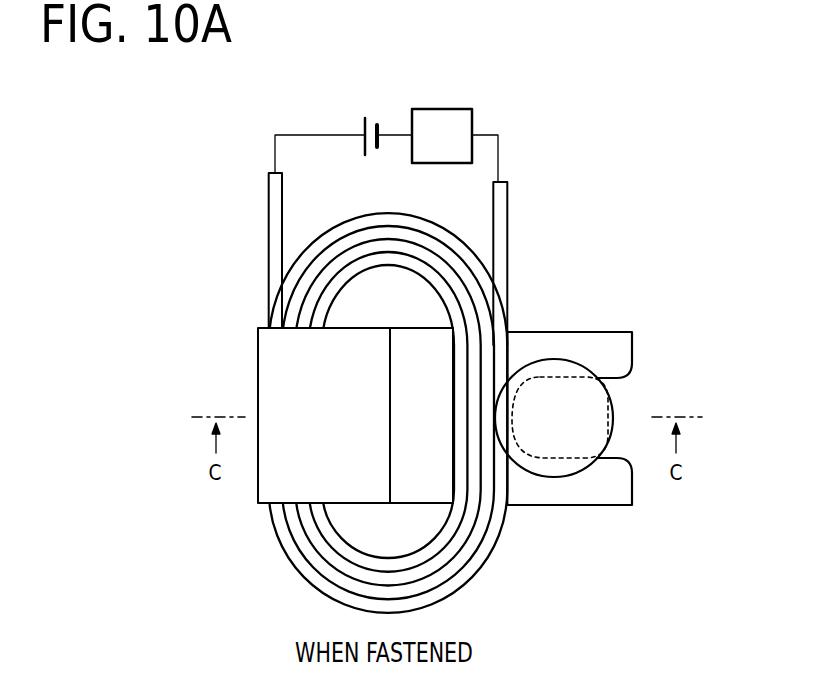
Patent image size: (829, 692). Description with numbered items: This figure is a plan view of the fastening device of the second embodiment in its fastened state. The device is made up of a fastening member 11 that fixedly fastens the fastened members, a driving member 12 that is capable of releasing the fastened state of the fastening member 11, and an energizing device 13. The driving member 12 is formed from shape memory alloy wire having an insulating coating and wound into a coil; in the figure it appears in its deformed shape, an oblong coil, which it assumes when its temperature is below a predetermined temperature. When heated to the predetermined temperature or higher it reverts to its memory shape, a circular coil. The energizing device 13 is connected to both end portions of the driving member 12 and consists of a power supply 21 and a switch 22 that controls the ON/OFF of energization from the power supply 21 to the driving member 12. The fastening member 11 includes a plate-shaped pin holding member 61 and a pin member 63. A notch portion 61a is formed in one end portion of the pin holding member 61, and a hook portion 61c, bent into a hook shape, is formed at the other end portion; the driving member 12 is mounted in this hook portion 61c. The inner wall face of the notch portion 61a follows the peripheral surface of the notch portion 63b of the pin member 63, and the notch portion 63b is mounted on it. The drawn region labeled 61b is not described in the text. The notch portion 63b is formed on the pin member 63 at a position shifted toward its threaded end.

The fastening member 11 is at (436, 308).
The driving member 12 is at (508, 197).
The energizing device 13 is at (387, 94).
The power supply 21 is at (370, 113).
The switch 22 is at (451, 104).
The pin holding member 61 is at (525, 333).
The notch portion 61a is at (613, 407).
The clamp block 61b is at (258, 369).
The hook portion 61c is at (365, 396).
The pin member 63 is at (576, 358).
The notch portion 63b is at (540, 377).